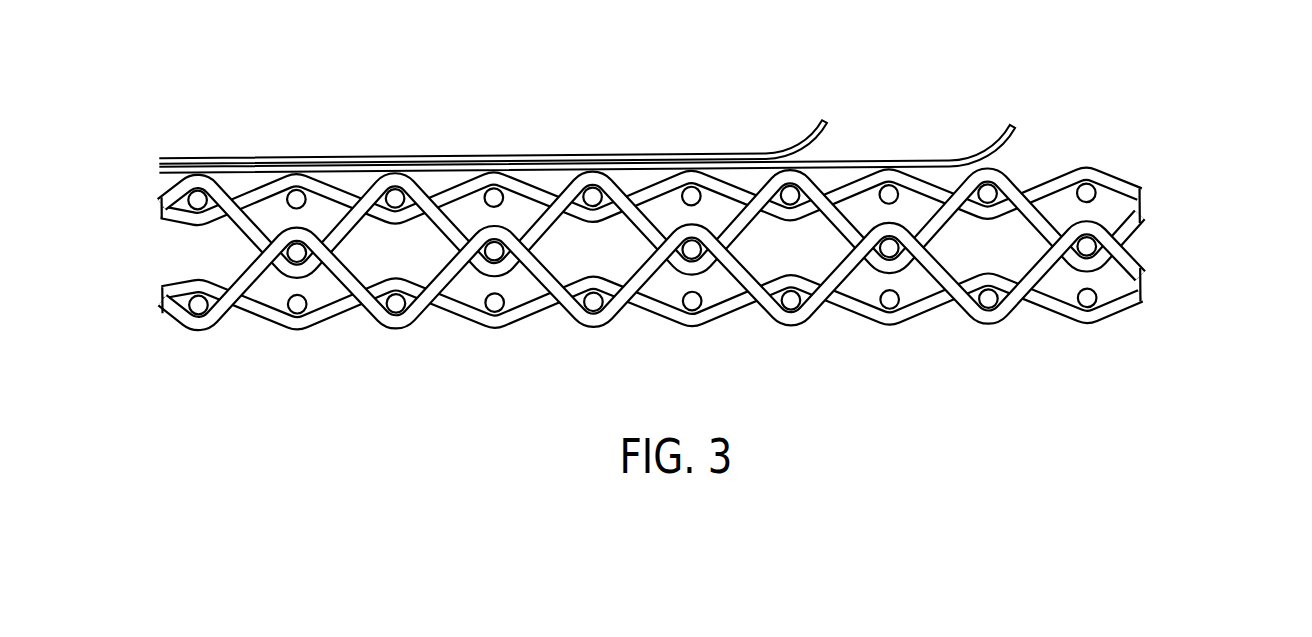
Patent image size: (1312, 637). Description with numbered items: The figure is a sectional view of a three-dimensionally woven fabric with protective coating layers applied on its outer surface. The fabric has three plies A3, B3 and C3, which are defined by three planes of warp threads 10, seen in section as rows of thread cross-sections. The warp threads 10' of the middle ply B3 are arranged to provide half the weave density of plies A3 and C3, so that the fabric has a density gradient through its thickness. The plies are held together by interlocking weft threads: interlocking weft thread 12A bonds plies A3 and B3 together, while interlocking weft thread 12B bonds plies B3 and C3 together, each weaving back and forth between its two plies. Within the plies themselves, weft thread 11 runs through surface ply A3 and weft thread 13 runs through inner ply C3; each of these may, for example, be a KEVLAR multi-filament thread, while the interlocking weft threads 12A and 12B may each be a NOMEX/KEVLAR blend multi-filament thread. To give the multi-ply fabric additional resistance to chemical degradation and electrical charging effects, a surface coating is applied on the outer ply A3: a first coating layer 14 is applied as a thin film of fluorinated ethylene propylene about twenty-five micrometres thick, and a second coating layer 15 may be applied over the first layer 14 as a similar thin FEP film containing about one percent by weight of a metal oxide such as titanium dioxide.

The warp threads 10 is at (400, 153).
The warp threads of ply B3 10' is at (518, 184).
The weft thread of surface ply A3 11 is at (253, 192).
The interlocking weft thread 12A is at (163, 202).
The interlocking weft thread 12B is at (164, 312).
The weft thread of inner ply C3 13 is at (265, 313).
The first coating layer 14 is at (1015, 120).
The second coating layer 15 is at (826, 120).
The ply A3 is at (1167, 190).
The ply B3 is at (1167, 245).
The ply C3 is at (1167, 298).